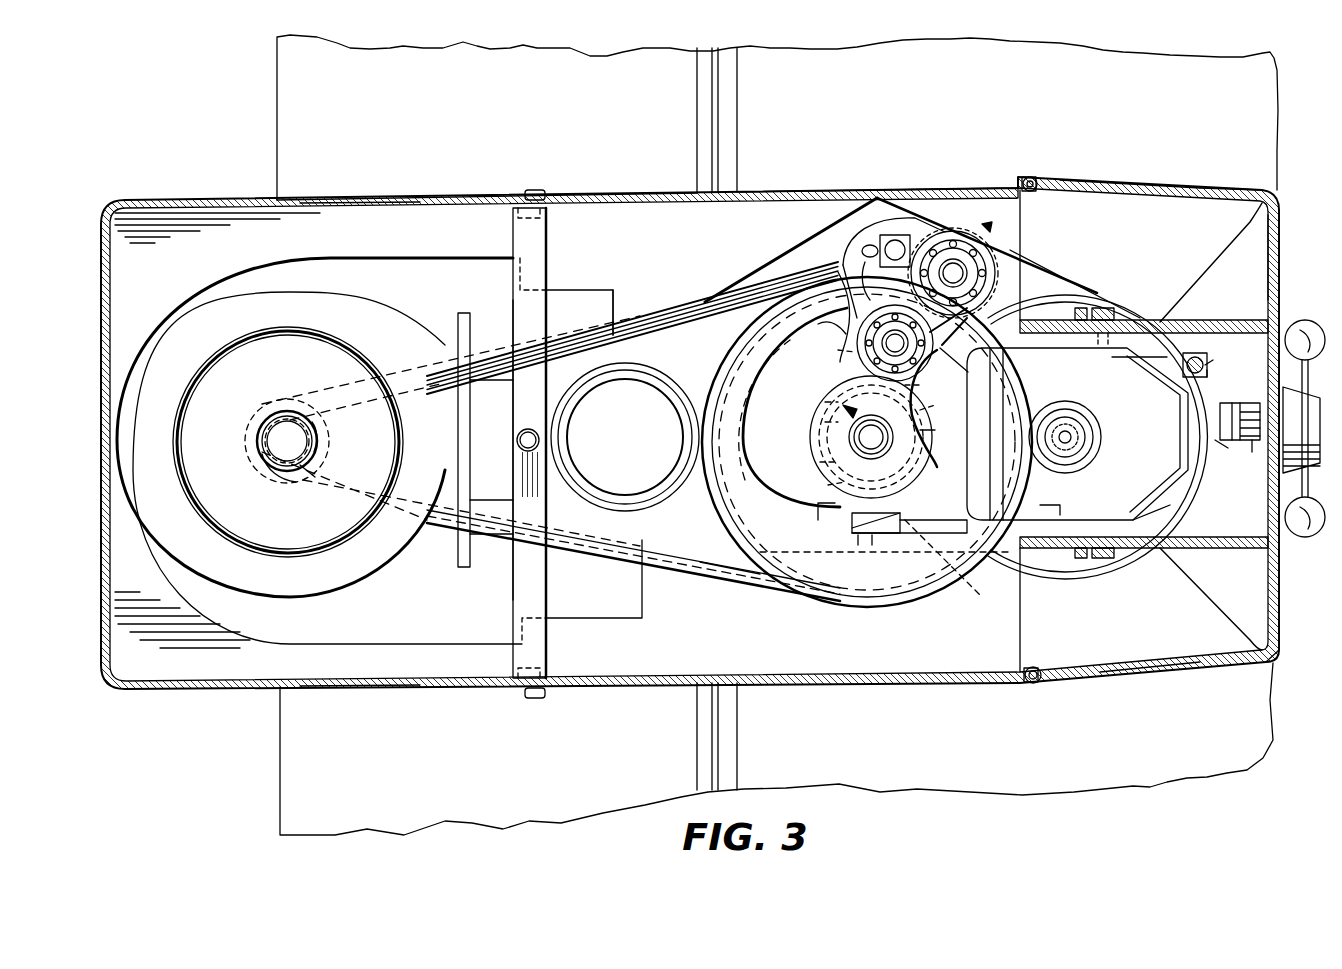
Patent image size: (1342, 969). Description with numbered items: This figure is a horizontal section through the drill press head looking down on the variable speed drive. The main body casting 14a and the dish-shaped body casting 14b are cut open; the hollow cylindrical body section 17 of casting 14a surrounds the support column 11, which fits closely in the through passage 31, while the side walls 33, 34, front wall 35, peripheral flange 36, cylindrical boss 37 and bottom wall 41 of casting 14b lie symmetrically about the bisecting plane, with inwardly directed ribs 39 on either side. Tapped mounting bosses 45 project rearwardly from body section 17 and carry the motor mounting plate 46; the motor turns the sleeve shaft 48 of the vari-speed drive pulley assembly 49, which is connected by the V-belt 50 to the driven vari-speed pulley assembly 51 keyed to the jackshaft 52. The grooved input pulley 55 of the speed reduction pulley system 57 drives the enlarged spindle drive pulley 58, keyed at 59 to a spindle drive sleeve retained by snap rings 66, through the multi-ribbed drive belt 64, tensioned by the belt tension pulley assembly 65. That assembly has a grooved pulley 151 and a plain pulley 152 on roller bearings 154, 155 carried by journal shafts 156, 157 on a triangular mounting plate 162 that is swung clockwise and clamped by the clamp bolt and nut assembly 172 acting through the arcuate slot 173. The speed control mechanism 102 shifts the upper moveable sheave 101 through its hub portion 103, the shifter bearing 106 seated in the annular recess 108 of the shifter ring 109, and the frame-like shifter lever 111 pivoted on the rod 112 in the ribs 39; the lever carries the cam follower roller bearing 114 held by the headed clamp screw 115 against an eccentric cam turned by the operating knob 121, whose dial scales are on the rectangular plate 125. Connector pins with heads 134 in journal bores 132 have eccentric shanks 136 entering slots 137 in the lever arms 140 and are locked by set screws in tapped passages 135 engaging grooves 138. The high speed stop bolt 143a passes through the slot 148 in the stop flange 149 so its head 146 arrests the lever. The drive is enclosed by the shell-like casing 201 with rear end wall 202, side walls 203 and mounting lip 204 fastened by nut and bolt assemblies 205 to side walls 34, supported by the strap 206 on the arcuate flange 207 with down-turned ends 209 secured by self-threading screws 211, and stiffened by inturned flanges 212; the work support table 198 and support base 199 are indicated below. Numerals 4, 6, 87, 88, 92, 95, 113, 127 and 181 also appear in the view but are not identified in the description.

The shaft housing 4 is at (978, 497).
The section arrow 6 is at (852, 417).
The support column 11 is at (618, 382).
The main body casting 14a is at (742, 560).
The dish-shaped body casting 14b is at (1240, 190).
The hollow cylindrical body section 17 is at (652, 542).
The through passage 31 is at (568, 448).
The side wall 33 is at (1127, 180).
The side wall 34 is at (1185, 670).
The front wall 35 is at (1262, 598).
The peripherally extending flange 36 is at (1272, 670).
The cylindrical boss 37 is at (1256, 454).
The inwardly directed ribs 39 is at (1160, 322).
The bottom wall 41 is at (818, 517).
The tapped mounting bosses 45 is at (518, 380).
The motor mounting plate 46 is at (470, 564).
The sleeve shaft 48 is at (276, 451).
The vari-speed drive pulley assembly 49 is at (265, 413).
The V-belt 50 is at (540, 352).
The driven vari-speed pulley assembly 51 is at (782, 302).
The jackshaft 52 is at (860, 447).
The annularly grooved pulley 55 is at (823, 422).
The speed reduction pulley system 57 is at (1080, 412).
The spindle drive pulley 58 is at (1176, 516).
The key 59 is at (1093, 430).
The multi-ribbed drive belt 64 is at (823, 402).
The belt tension pulley assembly 65 is at (953, 232).
The snap rings 66 is at (1062, 416).
The pulley 87 is at (400, 336).
The hub flange 88 is at (322, 466).
The hub key 92 is at (258, 470).
The hub ring 95 is at (314, 434).
The upper moveable sheave 101 is at (735, 528).
The speed control mechanism 102 is at (925, 542).
The reduced diameter hub portion 103 is at (830, 434).
The shifter bearing 106 is at (922, 434).
The annular recess 108 is at (922, 410).
The shifter ring 109 is at (822, 400).
The shifter lever 111 is at (1047, 500).
The rod 112 is at (1102, 318).
The clamp block 113 is at (1094, 318).
The cam follower roller bearing 114 is at (1218, 448).
The headed clamp screw 115 is at (1245, 404).
The cam shaft operating knob 121 is at (1290, 428).
The rectangular plate 125 is at (1280, 222).
The knob 127 is at (1307, 320).
The blind journal bores 132 is at (852, 521).
The cylindrical heads 134 is at (818, 463).
The tapped passage 135 is at (826, 485).
The eccentric shanks 136 is at (880, 352).
The through slots 137 is at (874, 545).
The annular groove 138 is at (925, 470).
The shifter lever arms 140 is at (1026, 314).
The headed stop bolt 143a is at (1207, 362).
The bolt head 146 is at (922, 540).
The slot 148 is at (1208, 372).
The stop flange 149 is at (1126, 356).
The grooved pulley 151 is at (1002, 252).
The plain pulley 152 is at (848, 308).
The roller bearing 154 is at (995, 287).
The roller bearing 155 is at (948, 355).
The journal shaft 156 is at (940, 278).
The journal shaft 157 is at (816, 328).
The triangular mounting plate 162 is at (848, 236).
The clamp bolt and nut assembly 172 is at (870, 281).
The arcuate slot 173 is at (868, 252).
The shaft 181 is at (1074, 440).
The work support table 198 is at (950, 112).
The support base 199 is at (476, 116).
The shell-like casing 201 is at (127, 199).
The rear end wall 202 is at (101, 300).
The side walls 203 is at (370, 198).
The mounting lip 204 is at (1040, 195).
The nut and bolt assemblies 205 is at (1028, 177).
The strap 206 is at (547, 250).
The arcuate flange 207 is at (517, 440).
The down-turned ends 209 is at (546, 216).
The self-threading screws 211 is at (542, 190).
The inturned flanges 212 is at (386, 236).